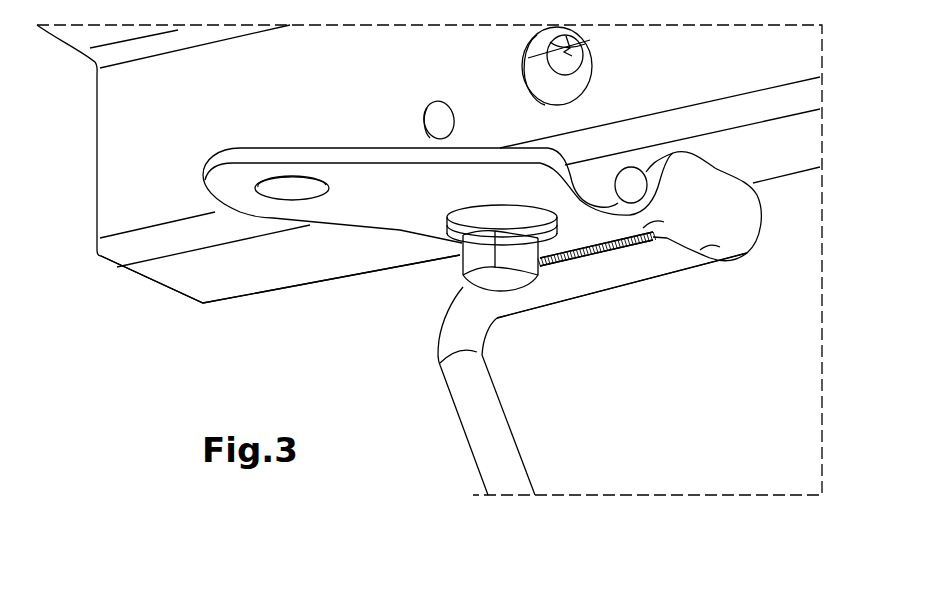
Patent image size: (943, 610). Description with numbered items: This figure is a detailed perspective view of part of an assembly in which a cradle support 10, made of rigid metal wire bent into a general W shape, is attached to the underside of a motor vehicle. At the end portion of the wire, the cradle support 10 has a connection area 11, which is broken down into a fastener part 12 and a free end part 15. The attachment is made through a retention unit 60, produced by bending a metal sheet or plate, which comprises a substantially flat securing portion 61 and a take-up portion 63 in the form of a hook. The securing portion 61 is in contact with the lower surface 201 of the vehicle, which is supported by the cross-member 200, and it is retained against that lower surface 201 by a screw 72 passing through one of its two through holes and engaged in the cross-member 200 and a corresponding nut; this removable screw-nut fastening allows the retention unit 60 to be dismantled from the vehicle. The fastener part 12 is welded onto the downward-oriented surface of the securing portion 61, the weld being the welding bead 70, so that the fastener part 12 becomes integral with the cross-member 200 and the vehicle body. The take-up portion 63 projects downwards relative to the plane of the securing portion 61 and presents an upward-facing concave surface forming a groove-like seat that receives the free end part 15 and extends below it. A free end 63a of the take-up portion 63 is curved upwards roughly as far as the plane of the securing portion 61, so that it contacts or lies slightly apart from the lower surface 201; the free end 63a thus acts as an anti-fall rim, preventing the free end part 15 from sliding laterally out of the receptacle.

The cradle support 10 is at (456, 458).
The connection area 11 is at (700, 349).
The fastener part 12 is at (598, 277).
The free end part 15 is at (632, 190).
The retention unit 60 is at (438, 271).
The securing portion 61 is at (370, 198).
The take-up portion 63 is at (740, 227).
The free end 63a is at (717, 167).
The welding bead 70 is at (567, 262).
The screw 72 is at (518, 279).
The cross-member 200 is at (126, 295).
The lower surface 201 is at (197, 290).